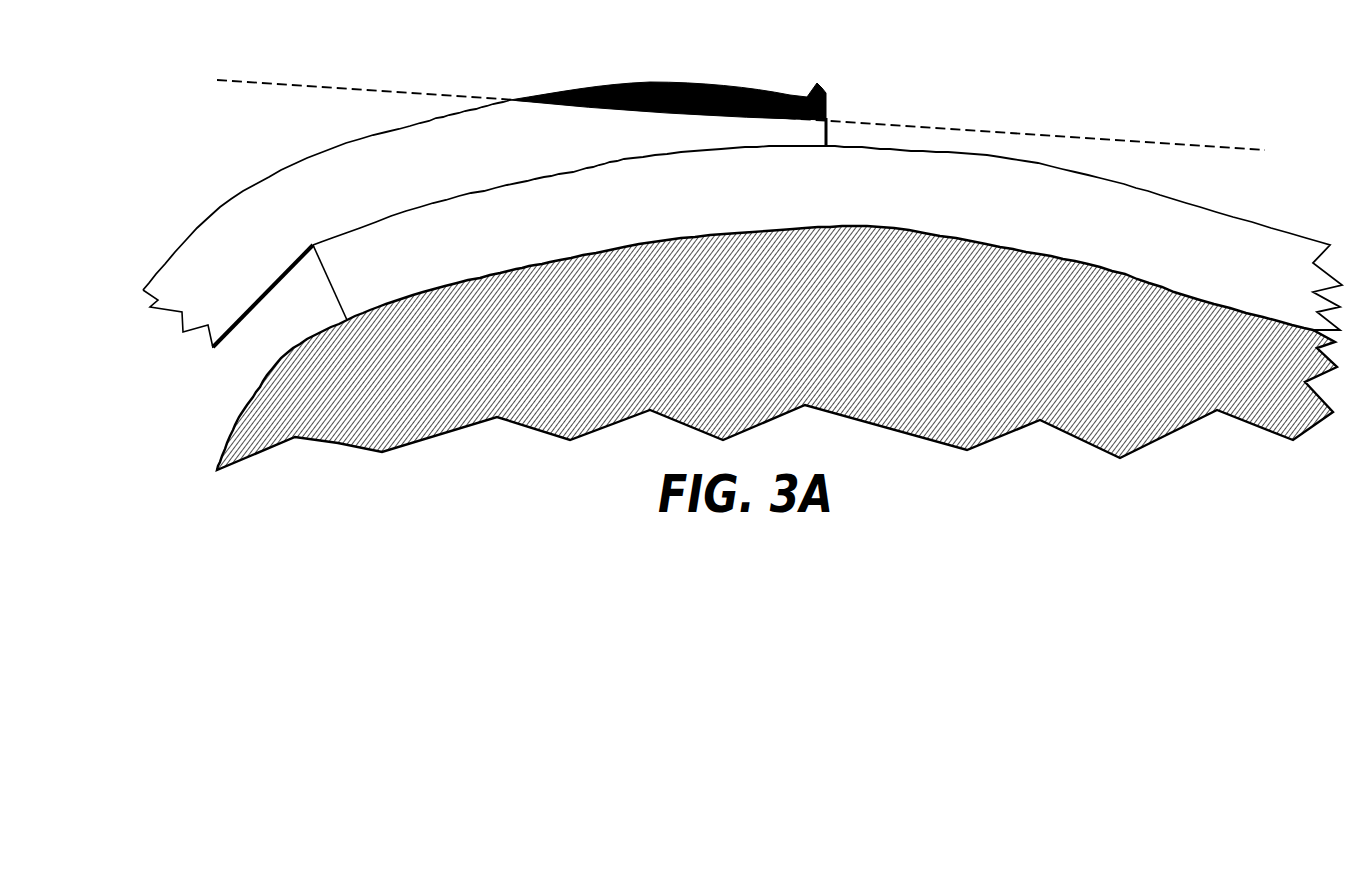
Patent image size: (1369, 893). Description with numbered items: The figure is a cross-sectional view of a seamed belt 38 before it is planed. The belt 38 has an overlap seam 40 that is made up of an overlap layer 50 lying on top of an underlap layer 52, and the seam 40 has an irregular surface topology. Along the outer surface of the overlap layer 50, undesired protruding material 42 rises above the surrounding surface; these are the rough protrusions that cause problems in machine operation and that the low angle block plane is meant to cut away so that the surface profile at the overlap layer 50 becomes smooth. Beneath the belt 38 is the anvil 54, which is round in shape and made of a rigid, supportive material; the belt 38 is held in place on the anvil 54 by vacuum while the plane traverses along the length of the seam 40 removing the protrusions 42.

The seamed belt 38 is at (243, 400).
The overlap seam 40 is at (829, 119).
The protruding material 42 is at (707, 80).
The overlap layer 50 is at (541, 152).
The underlap layer 52 is at (579, 235).
The anvil 54 is at (284, 367).